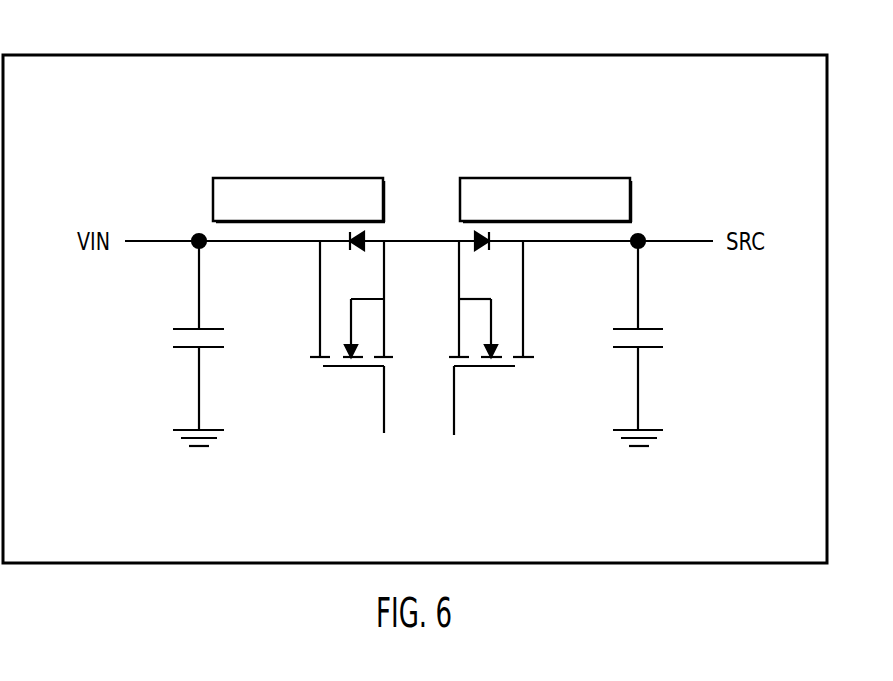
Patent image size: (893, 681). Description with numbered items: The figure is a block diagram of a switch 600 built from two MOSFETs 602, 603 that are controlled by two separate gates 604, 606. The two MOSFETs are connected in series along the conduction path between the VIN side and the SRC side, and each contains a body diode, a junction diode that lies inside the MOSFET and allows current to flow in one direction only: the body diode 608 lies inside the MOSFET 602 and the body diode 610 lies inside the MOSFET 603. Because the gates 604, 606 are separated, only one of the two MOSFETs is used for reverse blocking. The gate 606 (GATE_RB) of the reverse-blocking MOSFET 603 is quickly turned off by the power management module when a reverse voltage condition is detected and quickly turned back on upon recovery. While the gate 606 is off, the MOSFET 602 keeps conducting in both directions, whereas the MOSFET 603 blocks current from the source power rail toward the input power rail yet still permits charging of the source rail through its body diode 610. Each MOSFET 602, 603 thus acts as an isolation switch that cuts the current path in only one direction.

The switch 600 is at (65, 53).
The MOSFET 602 is at (333, 301).
The MOSFET 603 is at (509, 299).
The gate 604 is at (333, 465).
The gate 606 is at (500, 465).
The body diode 608 is at (298, 177).
The body diode 610 is at (544, 177).